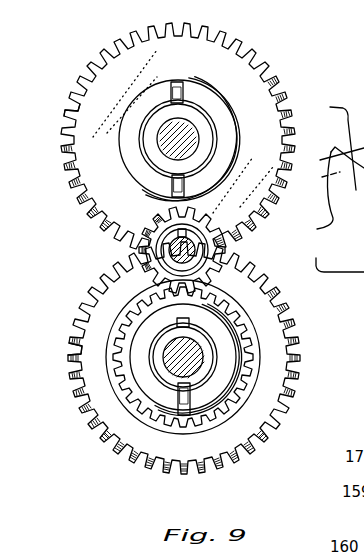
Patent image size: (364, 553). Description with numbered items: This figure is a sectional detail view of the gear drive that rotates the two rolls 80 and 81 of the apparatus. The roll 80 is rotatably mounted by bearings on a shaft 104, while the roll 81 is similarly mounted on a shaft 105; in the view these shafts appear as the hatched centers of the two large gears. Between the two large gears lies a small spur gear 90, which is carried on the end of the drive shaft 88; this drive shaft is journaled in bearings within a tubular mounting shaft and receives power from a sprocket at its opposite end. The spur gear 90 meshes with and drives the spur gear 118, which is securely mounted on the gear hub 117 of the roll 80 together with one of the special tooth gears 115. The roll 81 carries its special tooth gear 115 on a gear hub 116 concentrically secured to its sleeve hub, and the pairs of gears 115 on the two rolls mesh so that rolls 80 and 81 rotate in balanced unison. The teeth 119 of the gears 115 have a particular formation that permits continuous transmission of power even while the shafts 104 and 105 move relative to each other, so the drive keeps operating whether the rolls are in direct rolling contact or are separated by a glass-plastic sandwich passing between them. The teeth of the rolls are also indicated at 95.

The roll 81 is at (192, 132).
The gear teeth 95 is at (72, 114).
The special tooth gear 115 is at (112, 160).
The teeth 119 is at (93, 208).
The shaft 105 is at (200, 128).
The gear hub 116 is at (205, 140).
The spur gear 90 is at (218, 250).
The drive shaft 88 is at (197, 250).
The roll 80 is at (185, 358).
The spur gear 118 is at (237, 320).
The gear hub 117 is at (207, 352).
The shaft 104 is at (200, 363).